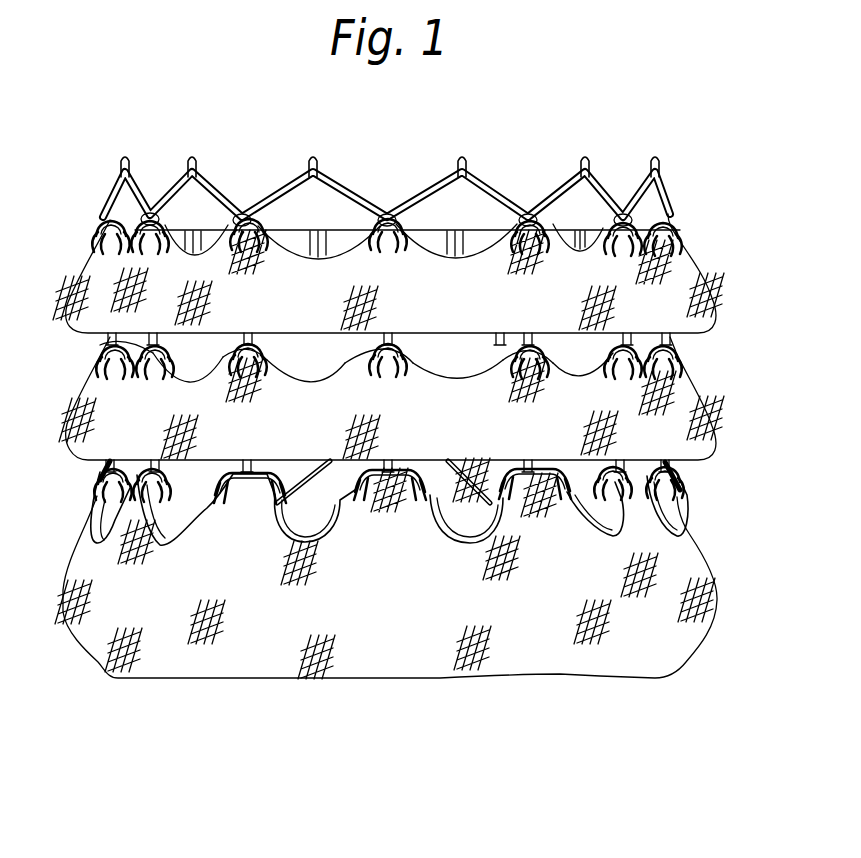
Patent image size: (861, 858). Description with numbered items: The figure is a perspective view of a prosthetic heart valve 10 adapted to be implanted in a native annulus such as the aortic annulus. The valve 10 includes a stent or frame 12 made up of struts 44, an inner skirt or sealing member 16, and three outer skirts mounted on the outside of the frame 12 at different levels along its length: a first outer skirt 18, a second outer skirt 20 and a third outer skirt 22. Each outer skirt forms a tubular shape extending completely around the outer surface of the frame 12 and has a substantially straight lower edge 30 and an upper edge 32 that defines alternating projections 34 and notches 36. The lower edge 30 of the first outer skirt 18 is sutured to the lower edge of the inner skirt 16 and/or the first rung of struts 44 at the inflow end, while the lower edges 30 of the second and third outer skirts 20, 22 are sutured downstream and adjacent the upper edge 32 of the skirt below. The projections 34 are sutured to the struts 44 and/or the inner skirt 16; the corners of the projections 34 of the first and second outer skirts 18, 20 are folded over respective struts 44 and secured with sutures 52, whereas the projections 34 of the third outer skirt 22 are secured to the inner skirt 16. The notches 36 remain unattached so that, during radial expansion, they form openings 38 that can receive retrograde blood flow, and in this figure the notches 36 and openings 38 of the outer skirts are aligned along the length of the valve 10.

The prosthetic heart valve 10 is at (570, 106).
The frame 12 is at (668, 196).
The inner skirt 16 is at (200, 483).
The first outer skirt 18 is at (707, 562).
The second outer skirt 20 is at (675, 352).
The third outer skirt 22 is at (685, 256).
The lower edge 30 is at (645, 374).
The upper edge 32 is at (247, 463).
The projections 34 is at (520, 338).
The notches 36 is at (672, 515).
The openings 38 is at (337, 237).
The struts 44 is at (283, 184).
The sutures 52 is at (137, 246).